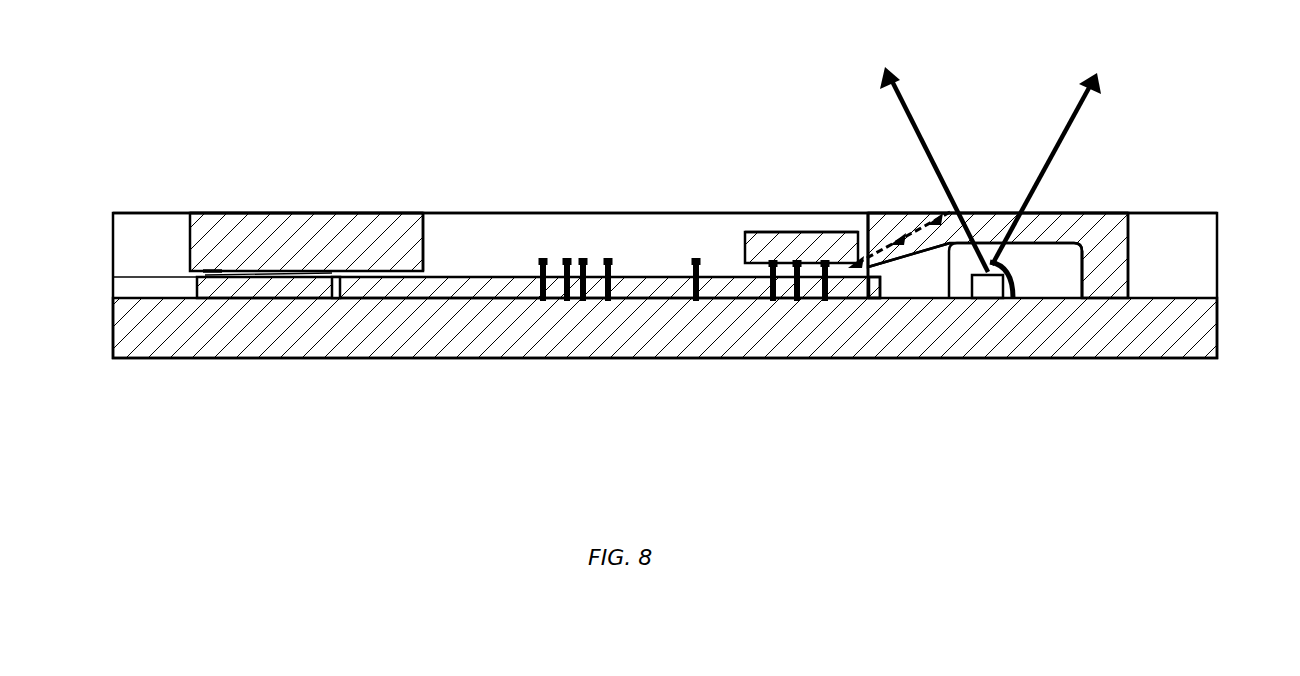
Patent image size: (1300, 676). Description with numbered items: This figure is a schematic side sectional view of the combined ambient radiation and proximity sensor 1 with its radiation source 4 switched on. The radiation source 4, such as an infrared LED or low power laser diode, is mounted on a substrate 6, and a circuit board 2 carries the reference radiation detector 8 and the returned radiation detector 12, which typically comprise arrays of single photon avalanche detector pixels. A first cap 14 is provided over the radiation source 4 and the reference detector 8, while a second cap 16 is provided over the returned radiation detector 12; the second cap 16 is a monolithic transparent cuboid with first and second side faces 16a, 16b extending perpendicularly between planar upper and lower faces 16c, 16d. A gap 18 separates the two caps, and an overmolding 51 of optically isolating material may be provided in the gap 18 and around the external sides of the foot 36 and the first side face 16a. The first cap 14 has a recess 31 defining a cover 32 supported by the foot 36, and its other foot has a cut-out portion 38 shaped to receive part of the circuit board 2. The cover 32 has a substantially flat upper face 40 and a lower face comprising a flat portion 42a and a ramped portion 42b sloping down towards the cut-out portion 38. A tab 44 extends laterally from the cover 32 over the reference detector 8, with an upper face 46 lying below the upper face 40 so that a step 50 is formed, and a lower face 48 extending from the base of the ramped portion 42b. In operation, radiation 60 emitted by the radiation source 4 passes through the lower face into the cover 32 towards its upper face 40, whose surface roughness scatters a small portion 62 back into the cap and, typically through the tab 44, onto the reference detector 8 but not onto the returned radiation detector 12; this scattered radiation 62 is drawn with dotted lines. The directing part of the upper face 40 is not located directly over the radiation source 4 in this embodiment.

The combined ambient radiation and proximity sensor 1 is at (215, 120).
The circuit board 2 is at (508, 275).
The radiation source 4 is at (988, 287).
The substrate 6 is at (193, 343).
The reference radiation detector 8 is at (812, 276).
The returned radiation detector 12 is at (337, 300).
The first cap 14 is at (1012, 200).
The second cap 16 is at (291, 211).
The first side face 16a is at (187, 228).
The second side face 16b is at (423, 222).
The upper face 16c is at (238, 213).
The lower face 16d is at (273, 277).
The gap 18 is at (585, 211).
The recess 31 is at (1038, 278).
The cover 32 is at (983, 222).
The foot 36 is at (1107, 278).
The cut-out portion 38 is at (920, 294).
The upper face 40 is at (1051, 213).
The flat portion 42a is at (1040, 245).
The ramped portion 42b is at (931, 253).
The tab 44 is at (797, 230).
The upper face 46 is at (783, 232).
The lower face 48 is at (753, 263).
The step 50 is at (858, 213).
The overmolding 51 is at (662, 253).
The radiation 60 is at (902, 115).
The scattered radiation 62 is at (898, 236).